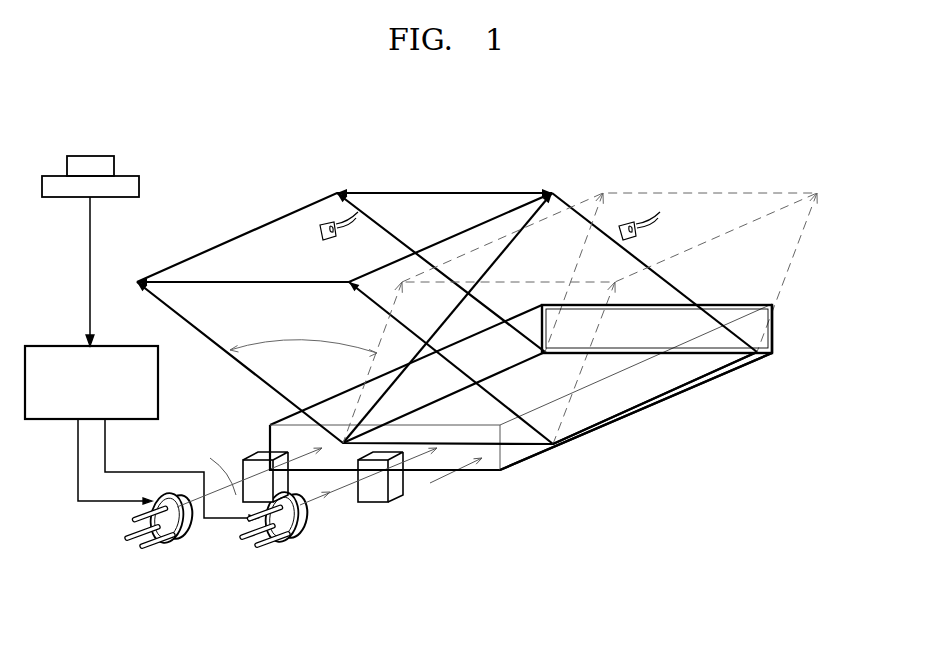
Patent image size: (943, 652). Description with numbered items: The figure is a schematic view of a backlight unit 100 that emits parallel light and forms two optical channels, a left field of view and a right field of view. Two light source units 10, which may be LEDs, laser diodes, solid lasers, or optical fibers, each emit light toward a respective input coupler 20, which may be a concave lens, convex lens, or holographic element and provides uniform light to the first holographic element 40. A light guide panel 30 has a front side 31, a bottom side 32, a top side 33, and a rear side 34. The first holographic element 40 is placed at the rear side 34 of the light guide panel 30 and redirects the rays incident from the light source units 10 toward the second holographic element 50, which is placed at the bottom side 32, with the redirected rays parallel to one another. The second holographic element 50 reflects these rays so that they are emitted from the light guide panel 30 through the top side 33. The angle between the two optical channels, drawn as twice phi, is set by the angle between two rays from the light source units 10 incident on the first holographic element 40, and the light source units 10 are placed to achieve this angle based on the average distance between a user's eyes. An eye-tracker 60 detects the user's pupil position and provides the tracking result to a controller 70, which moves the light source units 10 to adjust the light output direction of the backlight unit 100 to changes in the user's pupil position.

The light source unit 10 is at (180, 541).
The input coupler 20 is at (290, 475).
The light guide panel 30 is at (500, 470).
The front side 31 is at (329, 472).
The bottom side 32 is at (588, 455).
The top side 33 is at (436, 372).
The rear side 34 is at (743, 294).
The first holographic element 40 is at (673, 323).
The second holographic element 50 is at (640, 388).
The eye-tracker 60 is at (139, 187).
The controller 70 is at (128, 347).
The backlight unit 100 is at (659, 500).